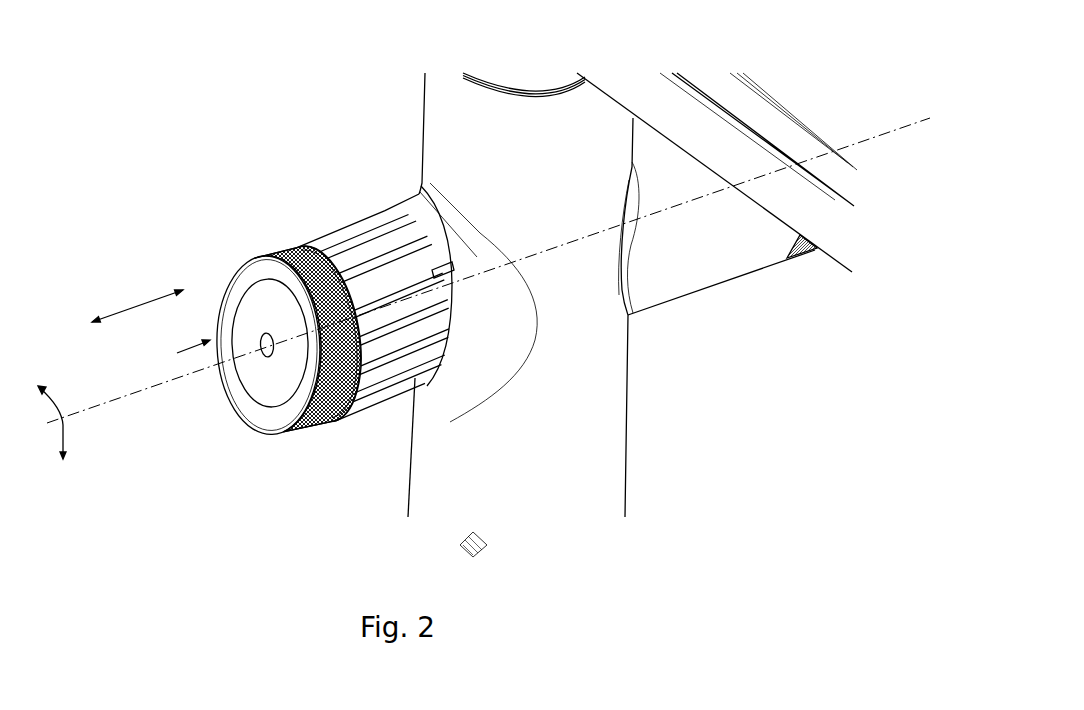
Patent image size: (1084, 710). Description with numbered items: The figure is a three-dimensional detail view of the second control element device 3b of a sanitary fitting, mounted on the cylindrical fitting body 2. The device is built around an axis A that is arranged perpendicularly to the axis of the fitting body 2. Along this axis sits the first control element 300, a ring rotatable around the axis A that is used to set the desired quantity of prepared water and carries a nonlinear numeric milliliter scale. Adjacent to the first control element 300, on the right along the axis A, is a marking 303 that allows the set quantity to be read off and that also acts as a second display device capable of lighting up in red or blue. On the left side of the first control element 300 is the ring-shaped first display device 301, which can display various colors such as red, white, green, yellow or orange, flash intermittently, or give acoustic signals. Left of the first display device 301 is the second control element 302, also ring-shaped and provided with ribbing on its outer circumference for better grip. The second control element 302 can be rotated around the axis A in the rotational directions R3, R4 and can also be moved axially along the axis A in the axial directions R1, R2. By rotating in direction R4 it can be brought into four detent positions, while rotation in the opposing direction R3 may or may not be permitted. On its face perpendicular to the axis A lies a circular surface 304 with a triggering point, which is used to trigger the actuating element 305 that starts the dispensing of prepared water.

The fitting body 2 is at (600, 445).
The second control element device 3b is at (326, 116).
The first control element 300 is at (424, 380).
The first display device 301 is at (368, 400).
The second control element 302 is at (300, 413).
The marking 303 is at (453, 260).
The circular surface 304 is at (265, 333).
The actuating element 305 is at (171, 354).
The axis A is at (872, 138).
The axial direction R1 is at (180, 290).
The axial direction R2 is at (108, 315).
The rotational direction R3 is at (63, 437).
The rotational direction R4 is at (47, 387).